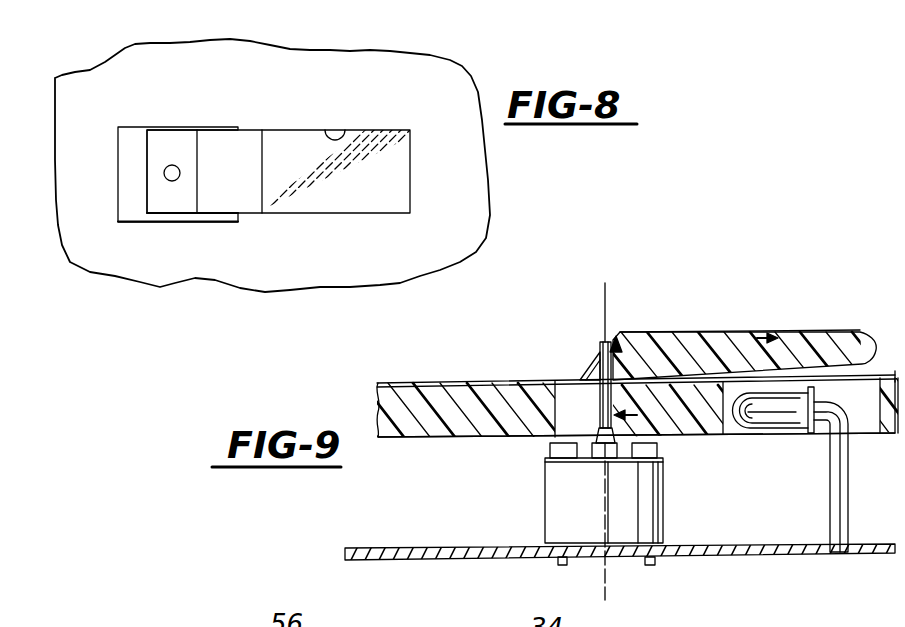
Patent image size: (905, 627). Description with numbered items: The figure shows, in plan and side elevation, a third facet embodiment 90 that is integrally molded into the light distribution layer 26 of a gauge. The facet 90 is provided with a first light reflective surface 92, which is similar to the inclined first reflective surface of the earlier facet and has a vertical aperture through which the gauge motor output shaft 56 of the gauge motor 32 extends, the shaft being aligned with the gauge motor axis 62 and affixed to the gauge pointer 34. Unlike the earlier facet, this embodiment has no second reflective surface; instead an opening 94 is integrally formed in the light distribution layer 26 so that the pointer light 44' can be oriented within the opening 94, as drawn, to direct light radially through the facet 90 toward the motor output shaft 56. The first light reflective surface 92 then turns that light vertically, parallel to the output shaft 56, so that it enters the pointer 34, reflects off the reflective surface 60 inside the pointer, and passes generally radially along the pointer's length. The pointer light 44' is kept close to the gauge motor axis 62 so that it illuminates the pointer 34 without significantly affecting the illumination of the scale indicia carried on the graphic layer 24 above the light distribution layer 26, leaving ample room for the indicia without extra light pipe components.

In FIG. 9, the graphic layer 24 is at (405, 383).
In FIG. 8, the light distribution layer 26 is at (447, 105).
In FIG. 9, the light distribution layer 26 is at (392, 437).
In FIG. 9, the gauge motor 32 is at (663, 503).
In FIG. 9, the gauge pointer 34 is at (806, 332).
In FIG. 9, the pointer light 44' is at (791, 469).
In FIG. 9, the gauge motor output shaft 56 is at (599, 341).
In FIG. 9, the reflective surface 60 is at (600, 353).
In FIG. 9, the gauge motor axis 62 is at (607, 565).
In FIG. 8, the third facet embodiment 90 is at (257, 121).
In FIG. 9, the third facet embodiment 90 is at (701, 444).
In FIG. 8, the first light reflective surface 92 is at (157, 148).
In FIG. 9, the first light reflective surface 92 is at (586, 392).
In FIG. 8, the opening 94 is at (350, 129).
In FIG. 9, the opening 94 is at (872, 361).